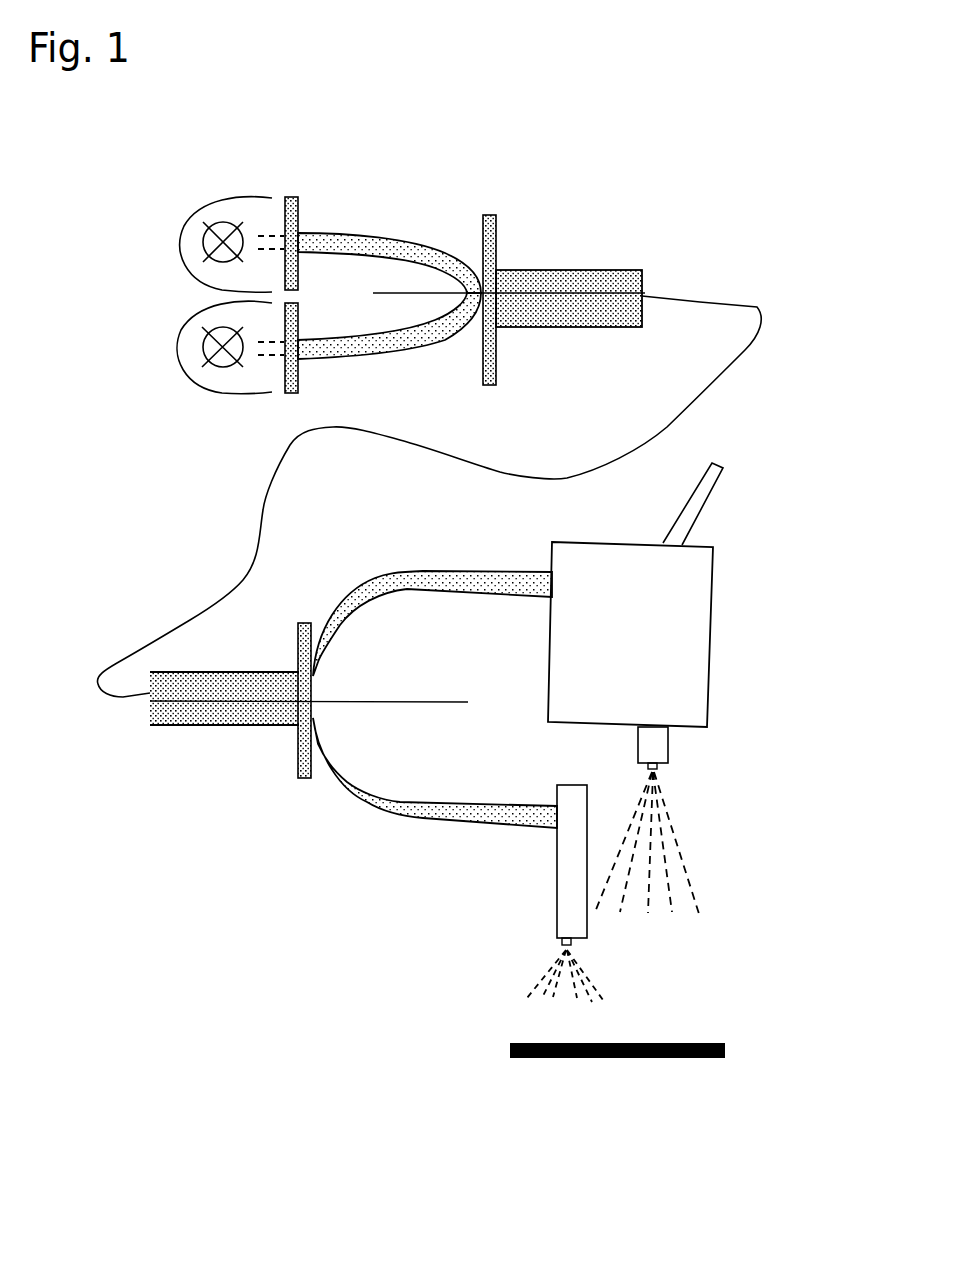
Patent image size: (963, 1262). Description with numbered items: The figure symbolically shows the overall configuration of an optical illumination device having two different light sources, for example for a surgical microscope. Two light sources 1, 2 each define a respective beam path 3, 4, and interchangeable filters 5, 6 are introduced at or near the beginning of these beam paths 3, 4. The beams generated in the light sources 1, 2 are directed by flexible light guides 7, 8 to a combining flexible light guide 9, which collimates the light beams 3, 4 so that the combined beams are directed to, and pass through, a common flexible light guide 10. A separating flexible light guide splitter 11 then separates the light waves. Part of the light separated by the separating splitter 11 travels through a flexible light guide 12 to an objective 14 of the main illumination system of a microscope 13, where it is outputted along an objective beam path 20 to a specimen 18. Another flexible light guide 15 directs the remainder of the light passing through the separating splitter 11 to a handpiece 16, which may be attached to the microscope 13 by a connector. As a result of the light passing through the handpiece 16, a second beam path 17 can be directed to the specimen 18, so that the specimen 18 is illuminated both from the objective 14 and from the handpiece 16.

The light source 1 is at (203, 230).
The light source 2 is at (202, 357).
The beam path 3 is at (270, 233).
The beam path 4 is at (268, 357).
The interchangeable filter 5 is at (300, 208).
The interchangeable filter 6 is at (297, 378).
The flexible light guide 7 is at (417, 253).
The flexible light guide 8 is at (425, 347).
The combining flexible light guide 9 is at (498, 240).
The common flexible light guide 10 is at (628, 283).
The separating flexible light guide splitter 11 is at (295, 738).
The flexible light guide 12 is at (403, 580).
The microscope 13 is at (683, 597).
The objective 14 is at (653, 737).
The flexible light guide 15 is at (387, 807).
The handpiece 16 is at (568, 862).
The second beam path 17 is at (540, 977).
The specimen 18 is at (655, 1045).
The objective beam path 20 is at (688, 865).